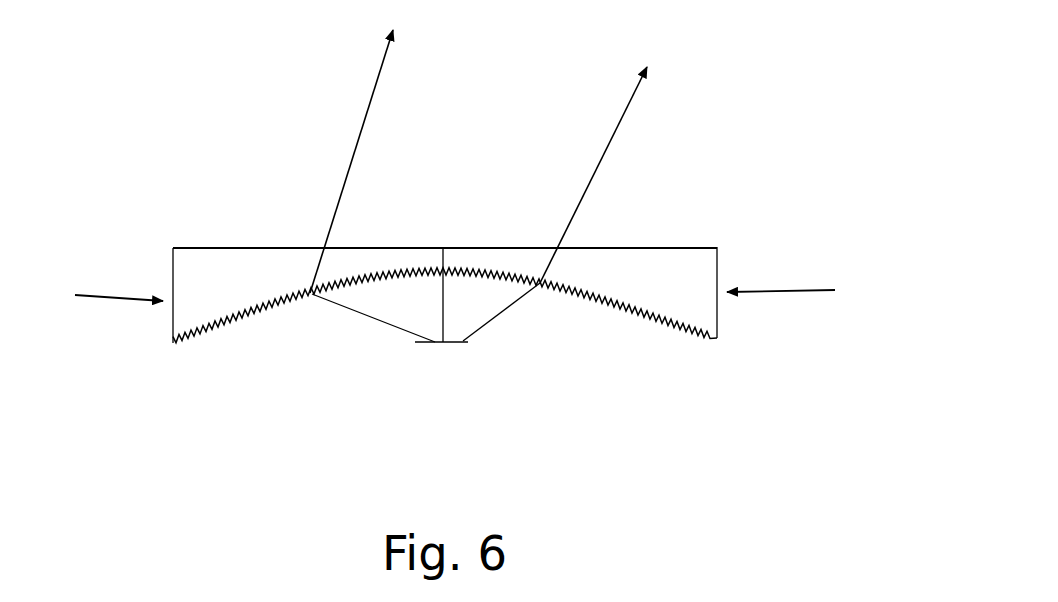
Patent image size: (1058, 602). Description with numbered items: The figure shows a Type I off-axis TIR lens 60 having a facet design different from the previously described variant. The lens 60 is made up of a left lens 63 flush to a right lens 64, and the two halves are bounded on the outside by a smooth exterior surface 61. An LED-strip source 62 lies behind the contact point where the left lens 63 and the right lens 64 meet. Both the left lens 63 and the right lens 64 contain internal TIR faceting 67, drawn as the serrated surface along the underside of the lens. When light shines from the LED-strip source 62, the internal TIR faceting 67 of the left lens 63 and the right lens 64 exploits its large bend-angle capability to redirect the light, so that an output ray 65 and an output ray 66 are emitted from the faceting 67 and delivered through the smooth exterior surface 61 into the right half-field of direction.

The Type I off-axis TIR lens 60 is at (247, 228).
The smooth exterior surface 61 is at (445, 236).
The LED-strip source 62 is at (445, 353).
The left-lens 63 is at (103, 298).
The right-lens 64 is at (798, 291).
The output ray 65 is at (352, 161).
The output ray 66 is at (597, 175).
The internal TIR faceting 67 is at (298, 298).